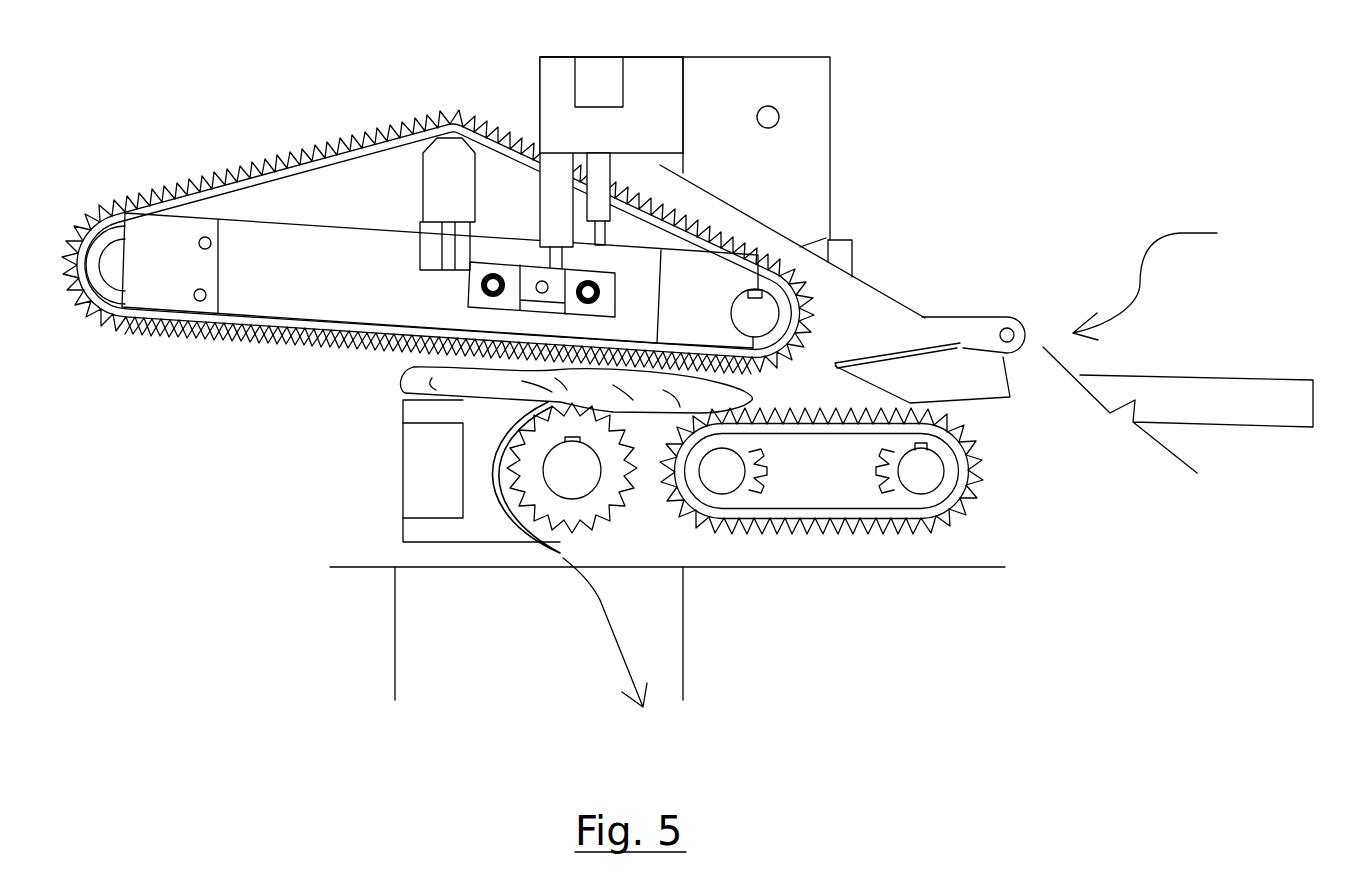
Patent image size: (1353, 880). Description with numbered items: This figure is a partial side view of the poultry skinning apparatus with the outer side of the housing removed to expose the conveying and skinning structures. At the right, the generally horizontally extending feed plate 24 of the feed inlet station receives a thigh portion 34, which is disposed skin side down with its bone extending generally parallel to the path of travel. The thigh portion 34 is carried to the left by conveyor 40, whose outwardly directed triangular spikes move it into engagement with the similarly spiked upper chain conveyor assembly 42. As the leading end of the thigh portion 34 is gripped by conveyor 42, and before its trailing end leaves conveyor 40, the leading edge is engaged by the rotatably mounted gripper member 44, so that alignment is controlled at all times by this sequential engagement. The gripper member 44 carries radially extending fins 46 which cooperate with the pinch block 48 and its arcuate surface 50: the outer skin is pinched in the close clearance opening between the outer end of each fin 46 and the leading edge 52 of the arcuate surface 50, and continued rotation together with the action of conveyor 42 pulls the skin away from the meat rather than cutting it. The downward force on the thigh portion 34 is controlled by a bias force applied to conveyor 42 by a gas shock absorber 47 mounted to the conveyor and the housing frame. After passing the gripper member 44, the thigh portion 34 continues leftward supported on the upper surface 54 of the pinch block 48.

The feed plate 24 is at (1258, 377).
The thigh portion 34 is at (410, 380).
The conveyor 40 is at (987, 490).
The upper chain conveyor assembly 42 is at (799, 262).
The gripper member 44 is at (597, 510).
The fins 46 is at (585, 545).
The gas shock absorber 47 is at (597, 172).
The pinch block 48 is at (465, 543).
The arcuate surface 50 is at (493, 470).
The leading edge 52 is at (533, 410).
The upper surface 54 is at (450, 400).